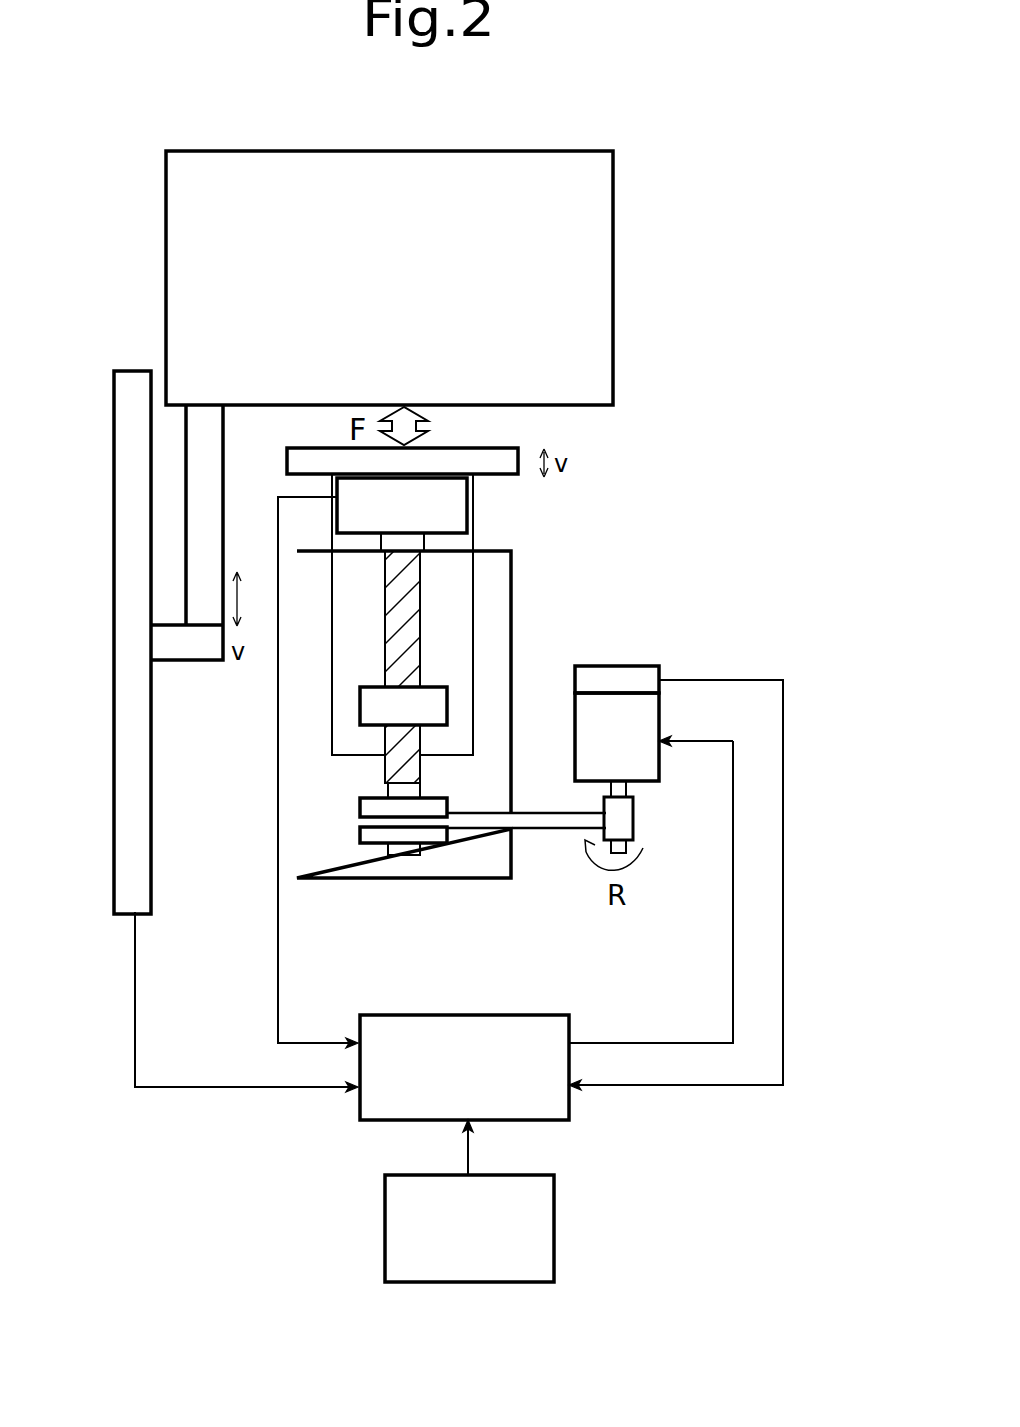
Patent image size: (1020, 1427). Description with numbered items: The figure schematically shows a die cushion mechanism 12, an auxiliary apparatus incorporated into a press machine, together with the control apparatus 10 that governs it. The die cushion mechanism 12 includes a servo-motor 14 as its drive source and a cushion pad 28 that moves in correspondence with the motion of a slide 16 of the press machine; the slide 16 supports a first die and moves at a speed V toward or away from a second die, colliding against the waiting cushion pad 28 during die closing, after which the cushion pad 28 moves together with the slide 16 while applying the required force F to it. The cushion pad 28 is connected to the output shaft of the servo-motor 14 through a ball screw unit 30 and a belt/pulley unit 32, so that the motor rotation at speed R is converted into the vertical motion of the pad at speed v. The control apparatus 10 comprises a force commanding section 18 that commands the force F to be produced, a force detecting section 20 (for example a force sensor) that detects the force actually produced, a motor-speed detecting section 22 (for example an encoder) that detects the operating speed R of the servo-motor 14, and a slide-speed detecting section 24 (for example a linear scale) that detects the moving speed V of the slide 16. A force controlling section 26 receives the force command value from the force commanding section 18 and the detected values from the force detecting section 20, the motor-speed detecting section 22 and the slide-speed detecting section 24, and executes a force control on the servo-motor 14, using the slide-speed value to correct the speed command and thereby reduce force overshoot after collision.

The control apparatus 10 is at (668, 1184).
The die cushion mechanism 12 is at (618, 557).
The servo-motor 14 is at (650, 783).
The slide 16 is at (608, 212).
The force commanding section 18 is at (520, 1282).
The force detecting section 20 is at (455, 515).
The motor-speed detecting section 22 is at (633, 663).
The slide-speed detecting section 24 is at (128, 577).
The force controlling section 26 is at (520, 1122).
The cushion pad 28 is at (500, 437).
The ball screw unit 30 is at (418, 608).
The belt/pulley unit 32 is at (533, 822).